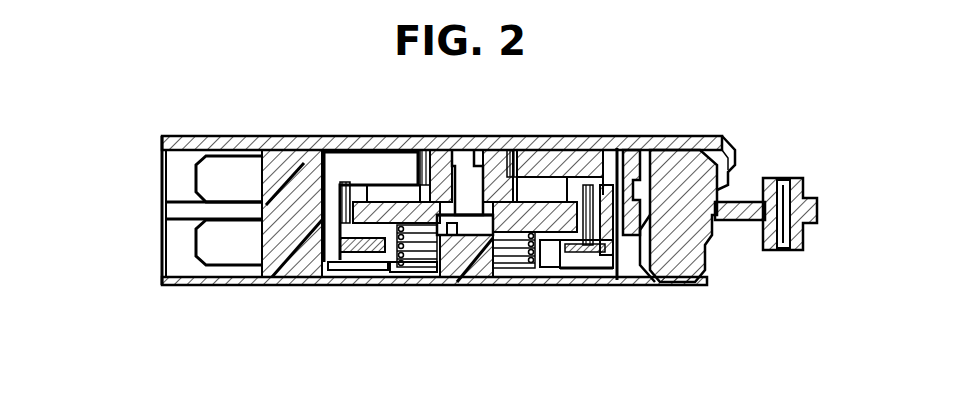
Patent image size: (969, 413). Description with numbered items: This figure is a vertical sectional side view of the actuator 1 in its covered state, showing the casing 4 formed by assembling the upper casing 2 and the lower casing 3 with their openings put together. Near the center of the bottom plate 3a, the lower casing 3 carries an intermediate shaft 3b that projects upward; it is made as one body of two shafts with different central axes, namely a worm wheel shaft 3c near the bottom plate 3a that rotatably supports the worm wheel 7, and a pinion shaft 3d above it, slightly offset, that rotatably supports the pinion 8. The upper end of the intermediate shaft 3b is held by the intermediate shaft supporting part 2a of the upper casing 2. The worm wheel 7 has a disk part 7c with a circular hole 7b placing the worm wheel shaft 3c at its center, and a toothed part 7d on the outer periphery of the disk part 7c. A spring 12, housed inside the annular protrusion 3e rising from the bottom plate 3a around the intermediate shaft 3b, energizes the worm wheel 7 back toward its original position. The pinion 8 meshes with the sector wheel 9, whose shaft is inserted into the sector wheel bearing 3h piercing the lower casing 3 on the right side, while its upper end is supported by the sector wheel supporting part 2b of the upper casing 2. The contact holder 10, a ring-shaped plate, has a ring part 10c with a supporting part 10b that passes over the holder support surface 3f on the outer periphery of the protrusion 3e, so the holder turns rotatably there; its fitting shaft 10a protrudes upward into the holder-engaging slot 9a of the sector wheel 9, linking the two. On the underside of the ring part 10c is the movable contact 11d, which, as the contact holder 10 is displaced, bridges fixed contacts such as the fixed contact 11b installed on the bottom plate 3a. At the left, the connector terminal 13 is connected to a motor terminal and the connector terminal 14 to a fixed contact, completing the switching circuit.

The actuator 1 is at (733, 113).
The upper casing 2 is at (292, 136).
The intermediate shaft supporting part 2a is at (468, 138).
The sector wheel supporting part 2b is at (712, 163).
The lower casing 3 is at (282, 286).
The bottom plate 3a is at (337, 287).
The intermediate shaft 3b is at (423, 287).
The worm wheel shaft 3c is at (473, 287).
The pinion shaft 3d is at (486, 138).
The annular protrusion 3e is at (550, 287).
The holder support surface 3f is at (370, 287).
The sector wheel bearing 3h is at (728, 268).
The casing 4 is at (200, 138).
The worm wheel 7 is at (357, 287).
The circular hole 7b is at (450, 287).
The disk part 7c is at (382, 138).
The toothed part 7d is at (312, 286).
The pinion 8 is at (435, 138).
The sector wheel 9 is at (540, 138).
The holder-engaging slot 9a is at (592, 138).
The contact holder 10 is at (567, 287).
The fitting shaft 10a is at (636, 138).
The supporting part 10b is at (400, 287).
The ring part 10c is at (587, 287).
The fixed contact 11b is at (610, 287).
The movable contact 11d is at (630, 287).
The spring 12 is at (522, 287).
The connector terminal 13 is at (200, 188).
The connector terminal 14 is at (200, 246).